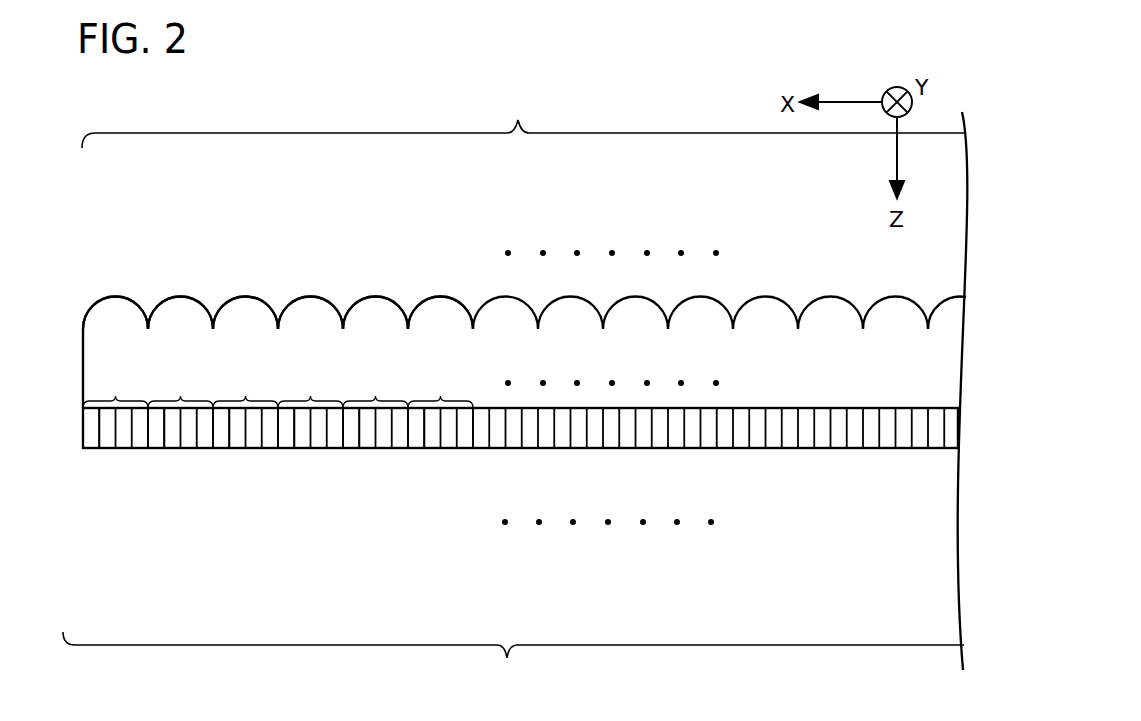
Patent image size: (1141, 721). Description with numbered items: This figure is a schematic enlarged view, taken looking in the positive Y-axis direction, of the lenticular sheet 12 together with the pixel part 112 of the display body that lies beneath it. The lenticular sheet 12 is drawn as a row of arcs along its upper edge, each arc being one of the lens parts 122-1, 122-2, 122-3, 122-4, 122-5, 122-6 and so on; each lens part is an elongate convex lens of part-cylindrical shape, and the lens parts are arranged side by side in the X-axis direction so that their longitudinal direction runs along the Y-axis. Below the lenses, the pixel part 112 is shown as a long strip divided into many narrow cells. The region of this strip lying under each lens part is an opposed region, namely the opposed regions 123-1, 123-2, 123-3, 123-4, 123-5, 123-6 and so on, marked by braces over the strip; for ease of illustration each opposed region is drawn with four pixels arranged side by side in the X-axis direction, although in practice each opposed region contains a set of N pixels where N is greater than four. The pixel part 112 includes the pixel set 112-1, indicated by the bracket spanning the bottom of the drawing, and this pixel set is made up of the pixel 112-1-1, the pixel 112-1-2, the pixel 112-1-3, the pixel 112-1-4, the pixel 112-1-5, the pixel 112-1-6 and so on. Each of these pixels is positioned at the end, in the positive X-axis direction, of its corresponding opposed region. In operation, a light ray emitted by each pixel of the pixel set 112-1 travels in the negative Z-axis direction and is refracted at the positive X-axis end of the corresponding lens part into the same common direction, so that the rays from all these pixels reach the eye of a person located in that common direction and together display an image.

The lenticular sheet 12 is at (524, 120).
The pixel part 112 is at (768, 470).
The pixel set 112-1 is at (513, 664).
The pixel 112-1-1 is at (91, 437).
The pixel 112-1-2 is at (155, 437).
The pixel 112-1-3 is at (221, 437).
The pixel 112-1-4 is at (285, 437).
The pixel 112-1-5 is at (351, 437).
The pixel 112-1-6 is at (415, 437).
The lens part 122-1 is at (116, 316).
The lens part 122-2 is at (182, 316).
The lens part 122-3 is at (246, 316).
The lens part 122-4 is at (312, 316).
The lens part 122-5 is at (376, 316).
The lens part 122-6 is at (442, 316).
The opposed region 123-1 is at (115, 409).
The opposed region 123-2 is at (180, 409).
The opposed region 123-3 is at (245, 409).
The opposed region 123-4 is at (310, 409).
The opposed region 123-5 is at (376, 409).
The opposed region 123-6 is at (440, 409).